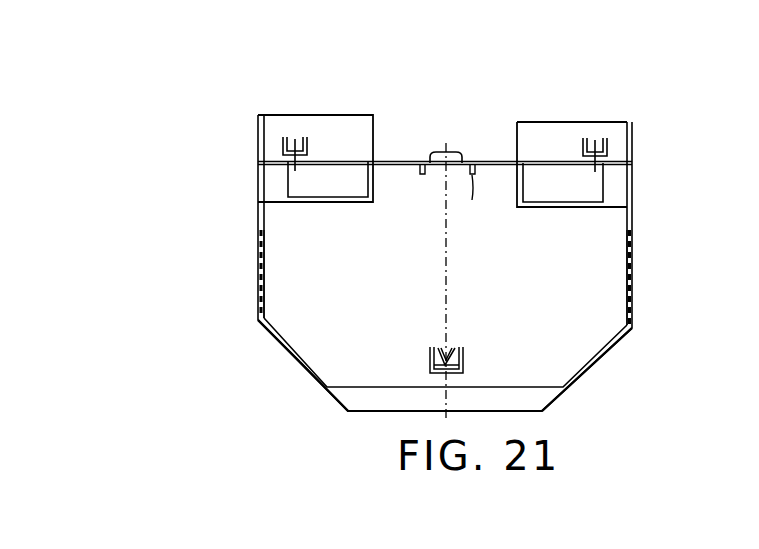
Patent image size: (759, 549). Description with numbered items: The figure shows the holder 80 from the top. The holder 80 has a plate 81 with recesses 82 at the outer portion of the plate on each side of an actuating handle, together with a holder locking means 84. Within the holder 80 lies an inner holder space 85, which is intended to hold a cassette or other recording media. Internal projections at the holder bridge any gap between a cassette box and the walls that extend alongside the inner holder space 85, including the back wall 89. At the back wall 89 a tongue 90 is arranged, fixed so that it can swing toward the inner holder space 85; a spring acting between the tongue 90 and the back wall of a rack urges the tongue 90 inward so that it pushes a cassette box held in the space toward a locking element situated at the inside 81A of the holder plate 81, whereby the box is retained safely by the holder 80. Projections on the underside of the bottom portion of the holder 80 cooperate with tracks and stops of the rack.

The holder 80 is at (612, 110).
The plate 81 is at (580, 345).
The inside of the holder plate 81A is at (308, 318).
The recesses 82 is at (303, 368).
The holder locking means 84 is at (463, 358).
The inner holder space 85 is at (424, 300).
The back wall 89 is at (385, 160).
The tongue 90 is at (424, 161).